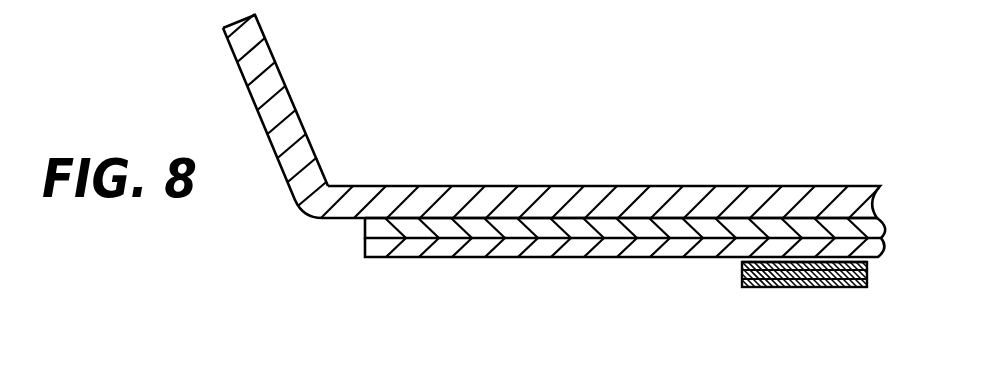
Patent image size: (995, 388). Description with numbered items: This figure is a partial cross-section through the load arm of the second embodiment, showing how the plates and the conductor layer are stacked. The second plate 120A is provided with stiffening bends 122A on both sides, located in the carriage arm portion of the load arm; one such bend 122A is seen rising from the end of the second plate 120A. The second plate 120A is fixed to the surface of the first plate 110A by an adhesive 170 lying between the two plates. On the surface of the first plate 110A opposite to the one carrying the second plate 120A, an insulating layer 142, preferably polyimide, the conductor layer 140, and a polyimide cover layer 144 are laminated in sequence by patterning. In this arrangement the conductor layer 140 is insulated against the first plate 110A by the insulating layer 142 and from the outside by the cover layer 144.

The stiffening bend 122A is at (262, 50).
The second plate 120A is at (528, 197).
The adhesive 170 is at (413, 232).
The first plate 110A is at (522, 250).
The insulating layer 142 is at (743, 264).
The conductor layer 140 is at (762, 288).
The polyimide cover layer 144 is at (838, 288).